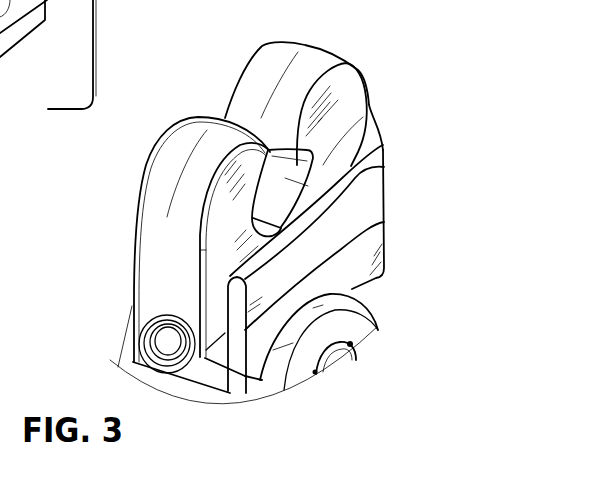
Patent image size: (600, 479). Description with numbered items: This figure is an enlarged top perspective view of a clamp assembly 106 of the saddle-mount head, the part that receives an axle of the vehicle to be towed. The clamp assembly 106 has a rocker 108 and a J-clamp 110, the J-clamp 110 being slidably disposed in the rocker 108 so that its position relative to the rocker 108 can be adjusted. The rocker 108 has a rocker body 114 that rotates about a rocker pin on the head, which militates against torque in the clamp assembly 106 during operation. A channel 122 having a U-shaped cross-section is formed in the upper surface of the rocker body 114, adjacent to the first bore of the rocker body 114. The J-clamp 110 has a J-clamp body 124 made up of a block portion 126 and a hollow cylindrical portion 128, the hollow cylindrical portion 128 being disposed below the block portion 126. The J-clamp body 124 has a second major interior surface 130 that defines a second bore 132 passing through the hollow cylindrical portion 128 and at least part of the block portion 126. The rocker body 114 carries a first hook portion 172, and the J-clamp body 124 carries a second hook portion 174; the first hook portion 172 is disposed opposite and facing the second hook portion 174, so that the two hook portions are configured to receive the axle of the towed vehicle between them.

The clamp assembly 106 is at (403, 132).
The rocker 108 is at (384, 193).
The rocker body 114 is at (314, 248).
The J-clamp 110 is at (133, 238).
The J-clamp body 124 is at (235, 250).
The block portion 126 is at (150, 285).
The second major interior surface 130 is at (152, 347).
The second bore 132 is at (168, 342).
The hollow cylindrical portion 128 is at (210, 357).
The channel 122 is at (258, 372).
The first hook portion 172 is at (308, 58).
The second hook portion 174 is at (148, 162).